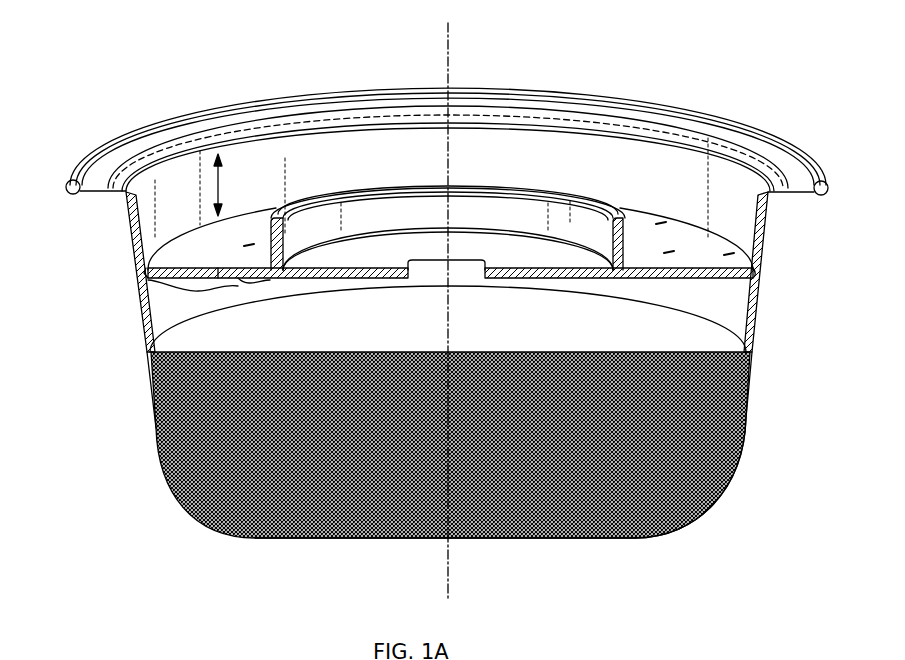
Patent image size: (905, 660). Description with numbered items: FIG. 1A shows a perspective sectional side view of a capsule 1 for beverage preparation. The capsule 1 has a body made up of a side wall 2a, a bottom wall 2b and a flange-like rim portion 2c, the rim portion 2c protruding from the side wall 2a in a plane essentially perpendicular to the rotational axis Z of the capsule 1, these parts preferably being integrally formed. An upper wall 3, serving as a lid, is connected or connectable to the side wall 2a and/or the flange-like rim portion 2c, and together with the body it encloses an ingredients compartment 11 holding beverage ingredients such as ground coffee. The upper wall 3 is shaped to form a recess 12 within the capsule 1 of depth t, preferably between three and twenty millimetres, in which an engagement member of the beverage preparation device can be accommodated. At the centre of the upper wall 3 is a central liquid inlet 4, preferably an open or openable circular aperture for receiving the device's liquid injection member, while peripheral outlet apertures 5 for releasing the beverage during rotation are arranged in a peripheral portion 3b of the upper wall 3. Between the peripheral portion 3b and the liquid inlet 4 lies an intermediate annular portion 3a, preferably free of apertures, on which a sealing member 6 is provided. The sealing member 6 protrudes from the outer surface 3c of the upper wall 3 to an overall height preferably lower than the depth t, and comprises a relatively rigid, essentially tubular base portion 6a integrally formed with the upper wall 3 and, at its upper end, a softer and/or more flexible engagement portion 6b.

The capsule 1 is at (692, 71).
The side wall 2a is at (744, 380).
The bottom wall 2b is at (540, 522).
The flange-like rim portion 2c is at (783, 170).
The upper wall 3 is at (640, 270).
The intermediate annular portion 3a is at (268, 272).
The peripheral portion 3b is at (192, 282).
The outer surface 3c is at (746, 262).
The central liquid inlet 4 is at (462, 268).
The peripheral outlet apertures 5 is at (128, 240).
The sealing member 6 is at (262, 242).
The base portion 6a is at (543, 210).
The engagement portion 6b is at (395, 184).
The ingredients compartment 11 is at (140, 400).
The recess 12 is at (338, 134).
The rotational axis Z is at (444, 26).
The depth t is at (221, 185).